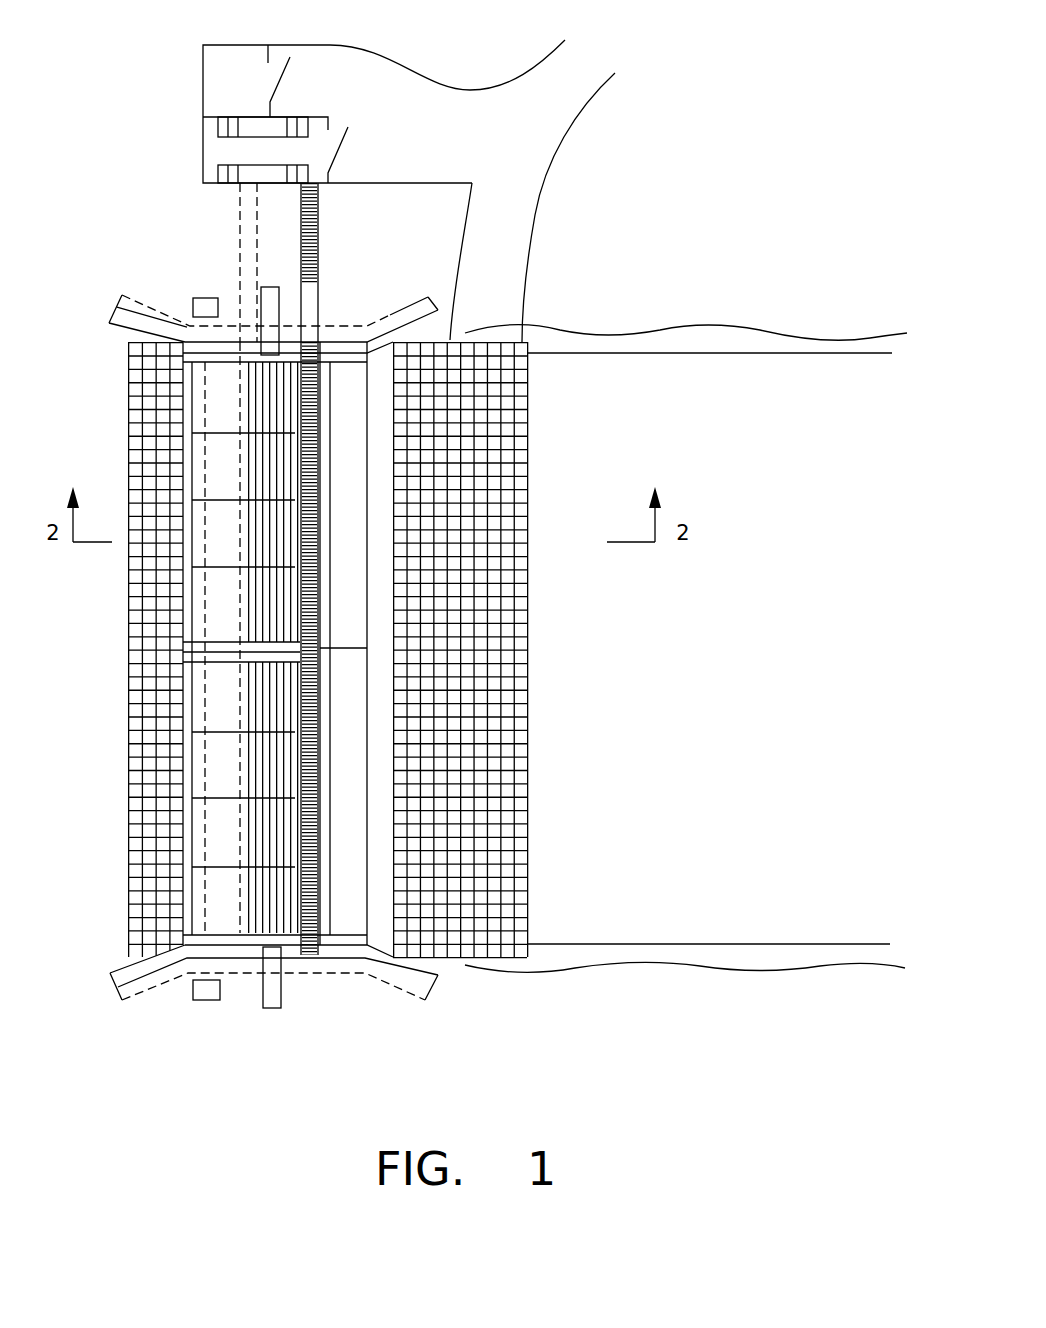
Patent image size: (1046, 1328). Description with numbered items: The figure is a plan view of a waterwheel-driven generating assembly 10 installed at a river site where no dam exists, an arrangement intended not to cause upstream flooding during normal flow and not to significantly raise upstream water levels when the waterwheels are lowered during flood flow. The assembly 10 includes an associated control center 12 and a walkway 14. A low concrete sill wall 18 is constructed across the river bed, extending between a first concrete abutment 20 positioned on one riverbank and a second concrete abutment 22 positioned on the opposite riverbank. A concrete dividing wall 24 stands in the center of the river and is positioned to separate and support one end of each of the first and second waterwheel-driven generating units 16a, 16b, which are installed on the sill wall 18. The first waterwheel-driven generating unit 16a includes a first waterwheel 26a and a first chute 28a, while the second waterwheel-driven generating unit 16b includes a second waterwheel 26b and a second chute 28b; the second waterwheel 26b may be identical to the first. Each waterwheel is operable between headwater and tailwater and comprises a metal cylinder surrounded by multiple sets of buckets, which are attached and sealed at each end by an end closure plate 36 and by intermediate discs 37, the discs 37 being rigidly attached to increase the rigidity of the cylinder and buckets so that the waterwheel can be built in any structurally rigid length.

The waterwheel-driven generating assembly 10 is at (105, 965).
The control center 12 is at (203, 150).
The walkway 14 is at (307, 340).
The first waterwheel-driven generating unit 16a is at (183, 458).
The second waterwheel-driven generating unit 16b is at (185, 765).
The sill wall 18 is at (220, 823).
The first concrete abutment 20 is at (397, 320).
The second concrete abutment 22 is at (433, 977).
The concrete dividing wall 24 is at (347, 650).
The first waterwheel 26a is at (277, 537).
The second waterwheel 26b is at (280, 773).
The first chute 28a is at (203, 528).
The second chute 28b is at (203, 697).
The end closure plate 36 is at (290, 377).
The intermediate disc 37 is at (293, 420).